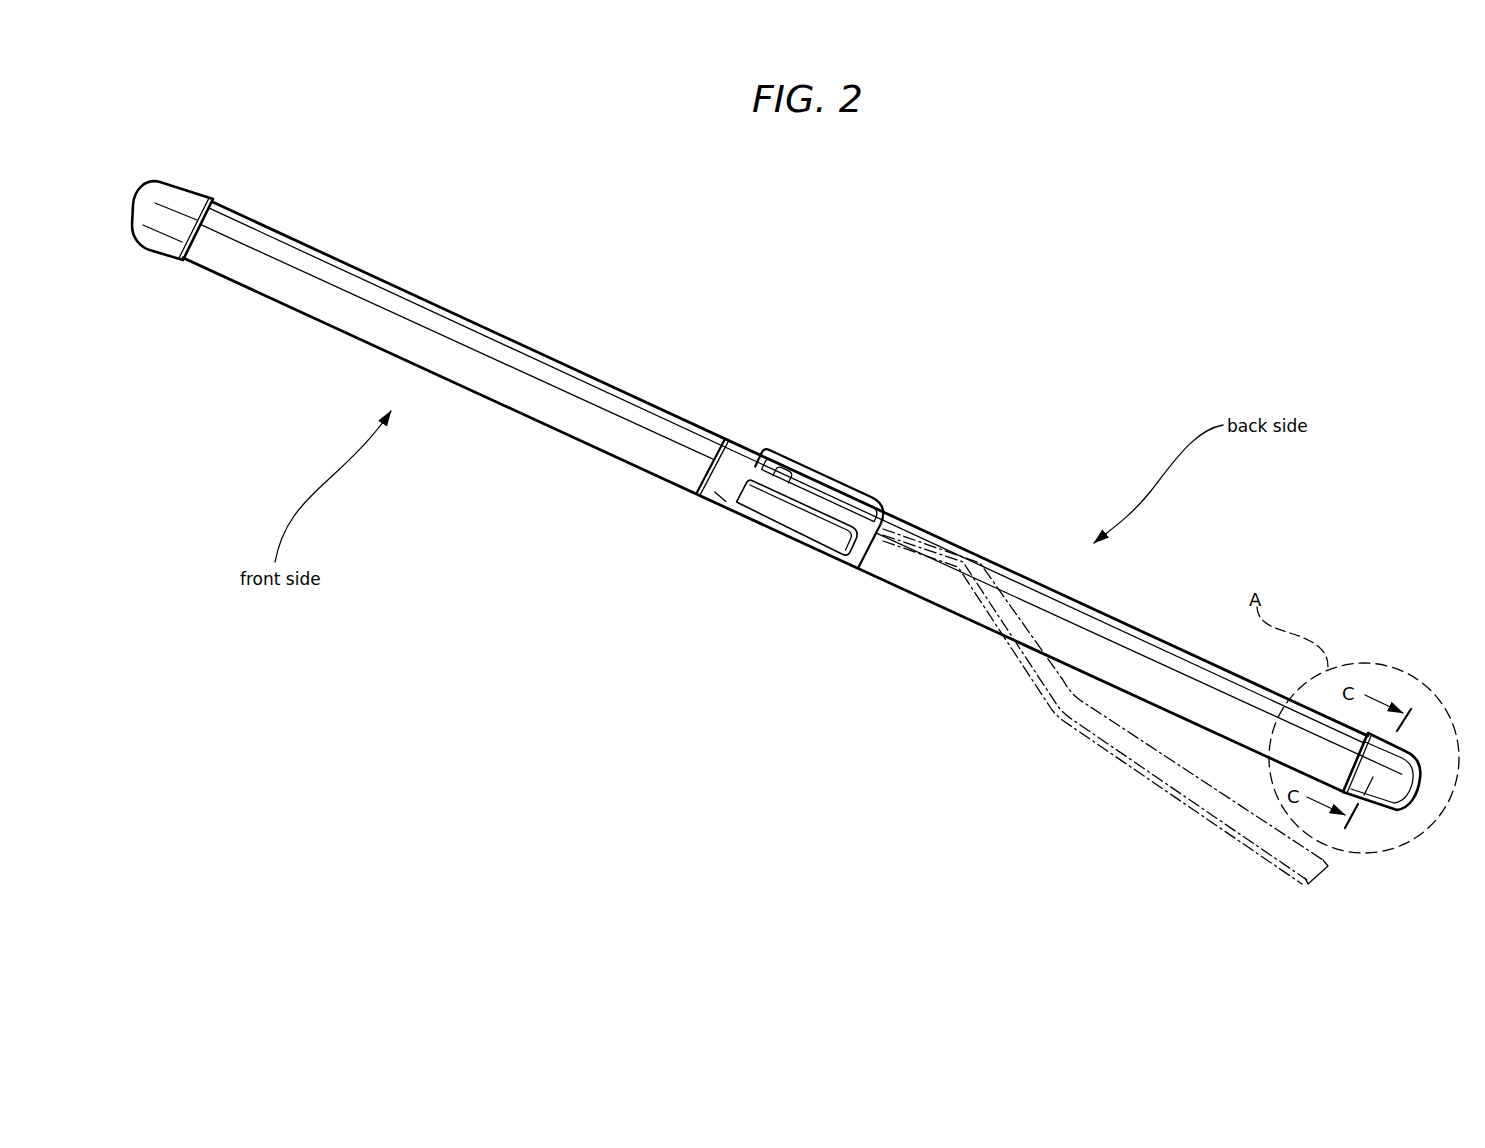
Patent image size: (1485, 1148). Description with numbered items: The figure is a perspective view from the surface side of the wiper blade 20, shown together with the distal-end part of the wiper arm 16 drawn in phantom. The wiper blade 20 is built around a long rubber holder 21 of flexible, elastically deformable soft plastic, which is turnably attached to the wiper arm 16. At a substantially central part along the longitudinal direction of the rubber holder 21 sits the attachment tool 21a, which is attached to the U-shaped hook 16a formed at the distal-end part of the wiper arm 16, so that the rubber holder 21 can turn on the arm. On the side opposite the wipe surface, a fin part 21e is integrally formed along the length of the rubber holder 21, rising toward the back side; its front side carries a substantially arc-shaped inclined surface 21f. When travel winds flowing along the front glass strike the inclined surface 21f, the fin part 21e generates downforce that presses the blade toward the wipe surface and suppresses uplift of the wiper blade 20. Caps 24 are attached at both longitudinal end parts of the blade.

The wiper arm 16 is at (1098, 716).
The U-shaped hook 16a is at (822, 494).
The wiper blade 20 is at (720, 396).
The rubber holder 21 is at (573, 413).
The attachment tool 21a is at (790, 518).
The fin part 21e is at (510, 335).
The inclined surface 21f is at (407, 312).
The cap 24 is at (168, 230).